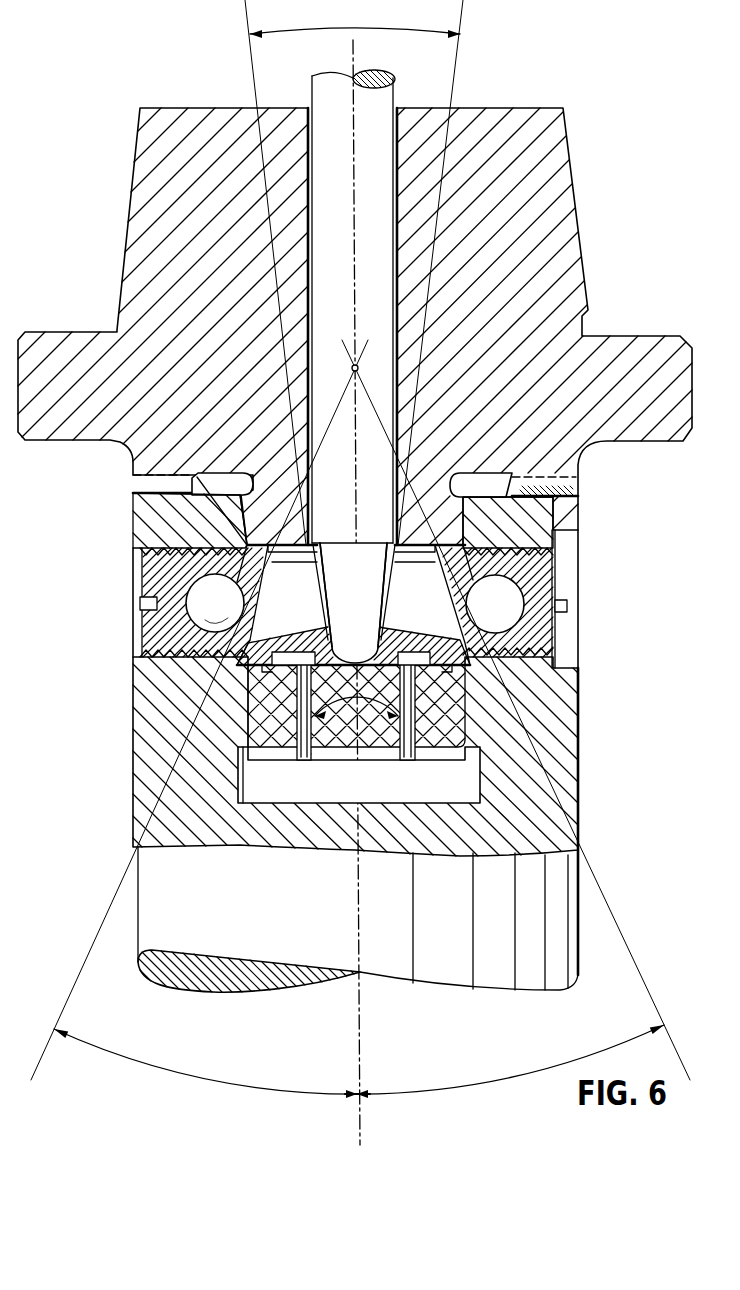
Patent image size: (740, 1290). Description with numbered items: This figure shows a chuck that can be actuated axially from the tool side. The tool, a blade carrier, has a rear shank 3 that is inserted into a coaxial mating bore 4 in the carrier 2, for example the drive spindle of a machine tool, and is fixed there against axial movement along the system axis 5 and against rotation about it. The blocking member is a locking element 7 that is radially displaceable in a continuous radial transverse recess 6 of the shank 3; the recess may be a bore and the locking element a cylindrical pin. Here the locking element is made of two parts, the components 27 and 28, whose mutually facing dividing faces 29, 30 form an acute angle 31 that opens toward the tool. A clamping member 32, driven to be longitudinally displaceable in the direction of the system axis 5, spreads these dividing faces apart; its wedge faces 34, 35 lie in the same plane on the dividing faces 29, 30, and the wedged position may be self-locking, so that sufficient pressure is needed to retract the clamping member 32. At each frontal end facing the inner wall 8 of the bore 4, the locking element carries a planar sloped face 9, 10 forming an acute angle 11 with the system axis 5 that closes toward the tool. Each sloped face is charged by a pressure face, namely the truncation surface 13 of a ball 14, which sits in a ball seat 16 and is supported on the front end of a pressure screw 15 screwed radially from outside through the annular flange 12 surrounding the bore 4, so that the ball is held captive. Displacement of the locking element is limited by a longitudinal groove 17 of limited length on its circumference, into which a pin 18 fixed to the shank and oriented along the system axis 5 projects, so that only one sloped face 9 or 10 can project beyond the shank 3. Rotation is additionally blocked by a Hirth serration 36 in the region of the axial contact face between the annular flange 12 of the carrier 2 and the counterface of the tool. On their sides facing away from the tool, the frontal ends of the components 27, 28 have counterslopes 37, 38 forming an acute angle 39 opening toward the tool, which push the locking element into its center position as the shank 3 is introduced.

The carrier 2 is at (584, 769).
The rear shank 3 is at (458, 727).
The mating bore 4 is at (245, 718).
The system axis 5 is at (356, 146).
The transverse recess 6 is at (243, 540).
The locking element 7 is at (582, 222).
The inner wall 8 is at (359, 775).
The sloped face 9 is at (250, 543).
The sloped face 10 is at (452, 558).
The acute angle 11 is at (224, 1082).
The annular flange 12 is at (565, 707).
The truncation surface 13 is at (255, 612).
The ball 14 is at (188, 668).
The pressure screw 15 is at (155, 580).
The ball seat 16 is at (190, 604).
The longitudinal groove 17 is at (322, 621).
The pin 18 is at (311, 762).
The component 27 is at (393, 542).
The component 28 is at (313, 543).
The dividing face 29 is at (387, 588).
The dividing face 30 is at (320, 580).
The acute angle 31 is at (363, 28).
The clamping member 32 is at (391, 97).
The wedge face 34 is at (312, 610).
The wedge face 35 is at (397, 605).
The Hirth serration 36 is at (560, 491).
The counterslope 37 is at (272, 673).
The counterslope 38 is at (454, 673).
The acute angle 39 is at (356, 718).